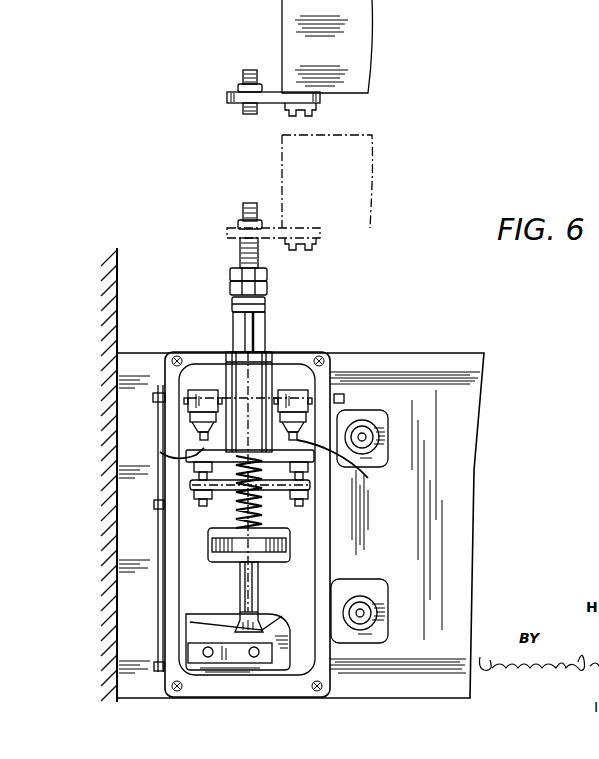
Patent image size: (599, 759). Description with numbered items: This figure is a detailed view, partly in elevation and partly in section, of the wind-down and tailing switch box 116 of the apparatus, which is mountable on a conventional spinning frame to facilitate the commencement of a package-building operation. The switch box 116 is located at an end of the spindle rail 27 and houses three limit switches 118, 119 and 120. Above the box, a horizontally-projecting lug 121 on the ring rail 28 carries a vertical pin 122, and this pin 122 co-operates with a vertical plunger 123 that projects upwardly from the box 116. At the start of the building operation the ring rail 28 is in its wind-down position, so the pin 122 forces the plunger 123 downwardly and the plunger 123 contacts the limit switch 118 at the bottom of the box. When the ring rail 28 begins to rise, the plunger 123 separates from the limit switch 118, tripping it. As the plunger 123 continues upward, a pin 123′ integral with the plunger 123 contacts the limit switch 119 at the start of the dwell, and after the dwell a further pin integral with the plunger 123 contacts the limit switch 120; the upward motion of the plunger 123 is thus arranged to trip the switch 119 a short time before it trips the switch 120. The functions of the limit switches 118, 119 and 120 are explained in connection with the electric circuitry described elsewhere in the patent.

The spindle rail 27 is at (406, 363).
The ring rail 28 is at (297, 28).
The wind-down and tailing switch box 116 is at (110, 505).
The limit switch 118 is at (262, 628).
The limit switch 119 is at (300, 432).
The limit switch 120 is at (192, 426).
The horizontally-projecting lug 121 is at (276, 101).
The vertical pin 122 is at (248, 106).
The vertical plunger 123 is at (240, 262).
The pin 123′ is at (356, 469).